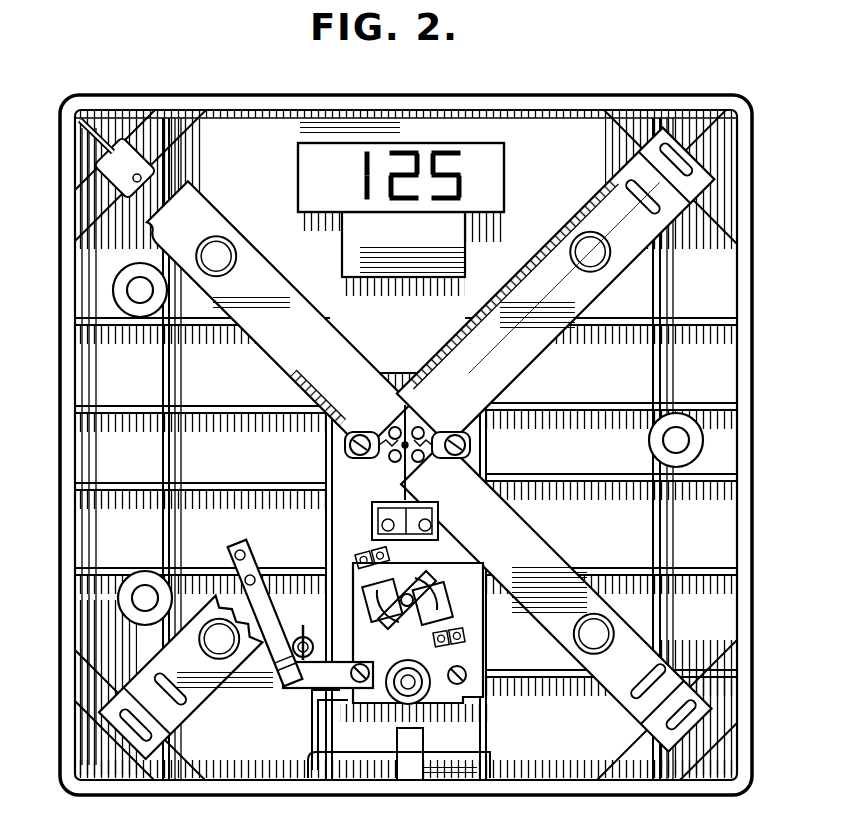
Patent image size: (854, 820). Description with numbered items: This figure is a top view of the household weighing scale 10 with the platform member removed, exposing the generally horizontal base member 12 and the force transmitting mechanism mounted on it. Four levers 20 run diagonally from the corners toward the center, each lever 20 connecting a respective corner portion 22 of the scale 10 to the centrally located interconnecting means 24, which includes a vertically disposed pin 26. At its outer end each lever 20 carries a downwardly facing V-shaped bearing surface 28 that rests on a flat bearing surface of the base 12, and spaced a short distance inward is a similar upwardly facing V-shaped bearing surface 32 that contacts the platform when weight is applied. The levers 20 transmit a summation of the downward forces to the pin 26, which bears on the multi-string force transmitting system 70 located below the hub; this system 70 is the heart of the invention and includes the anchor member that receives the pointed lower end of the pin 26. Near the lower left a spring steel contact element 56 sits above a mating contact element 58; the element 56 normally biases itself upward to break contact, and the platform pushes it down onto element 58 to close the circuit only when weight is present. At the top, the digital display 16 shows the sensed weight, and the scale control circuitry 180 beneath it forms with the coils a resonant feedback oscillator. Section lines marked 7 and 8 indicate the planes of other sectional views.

The weighing scale 10 is at (754, 266).
The base member 12 is at (754, 331).
The digital display 16 is at (432, 141).
The scale control circuitry 180 is at (443, 240).
The lever 20 is at (523, 340).
The corner portion 22 is at (716, 152).
The interconnecting means 24 is at (436, 420).
The pin 26 is at (403, 438).
The V-shaped bearing surface 28 is at (665, 140).
The upwardly facing V-shaped bearing surface 32 is at (657, 214).
The spring steel contact element 56 is at (270, 623).
The mating contact element 58 is at (300, 690).
The multi-string force transmitting system 70 is at (437, 566).
The section line 7- 7 is at (28, 395).
The section line 8- 8 is at (735, 43).